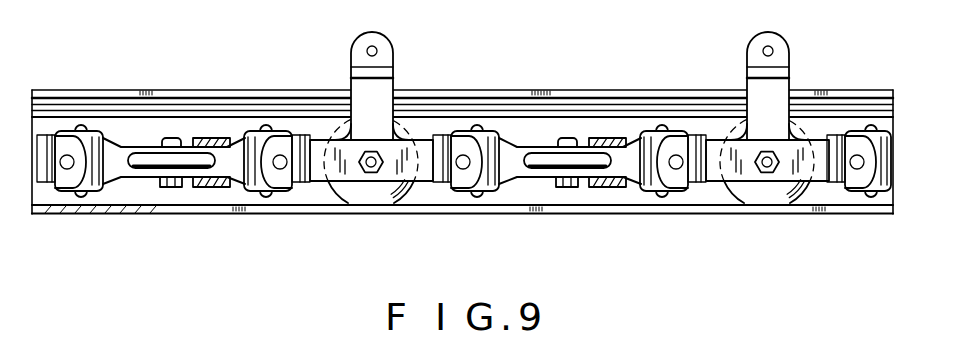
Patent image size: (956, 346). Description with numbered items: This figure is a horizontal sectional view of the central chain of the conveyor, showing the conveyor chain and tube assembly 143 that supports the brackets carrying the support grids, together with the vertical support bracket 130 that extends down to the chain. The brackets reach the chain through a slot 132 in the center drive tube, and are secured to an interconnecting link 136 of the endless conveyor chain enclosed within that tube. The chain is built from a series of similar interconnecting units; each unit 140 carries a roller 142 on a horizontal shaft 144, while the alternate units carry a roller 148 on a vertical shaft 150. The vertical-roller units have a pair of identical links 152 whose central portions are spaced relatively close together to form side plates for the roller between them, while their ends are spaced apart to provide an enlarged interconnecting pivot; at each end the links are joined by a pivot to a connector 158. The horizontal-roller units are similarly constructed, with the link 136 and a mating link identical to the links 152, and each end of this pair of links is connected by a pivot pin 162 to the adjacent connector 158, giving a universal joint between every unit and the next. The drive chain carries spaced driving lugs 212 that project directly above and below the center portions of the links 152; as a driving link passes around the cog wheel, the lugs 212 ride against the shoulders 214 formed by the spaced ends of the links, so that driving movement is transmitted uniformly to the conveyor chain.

The support bracket 130 is at (401, 77).
The slot 132 is at (505, 89).
The interconnecting link 136 is at (403, 118).
The interconnecting unit 140 is at (383, 139).
The roller 142 is at (345, 194).
The conveyor chain and tube assembly 143 is at (75, 90).
The horizontal shaft 144 is at (385, 206).
The roller 148 is at (171, 212).
The vertical shaft 150 is at (217, 89).
The link 152 is at (165, 119).
The connector 158 is at (191, 148).
The pivot pin 162 is at (484, 194).
The driving lug 212 is at (242, 101).
The shoulder 214 is at (286, 122).